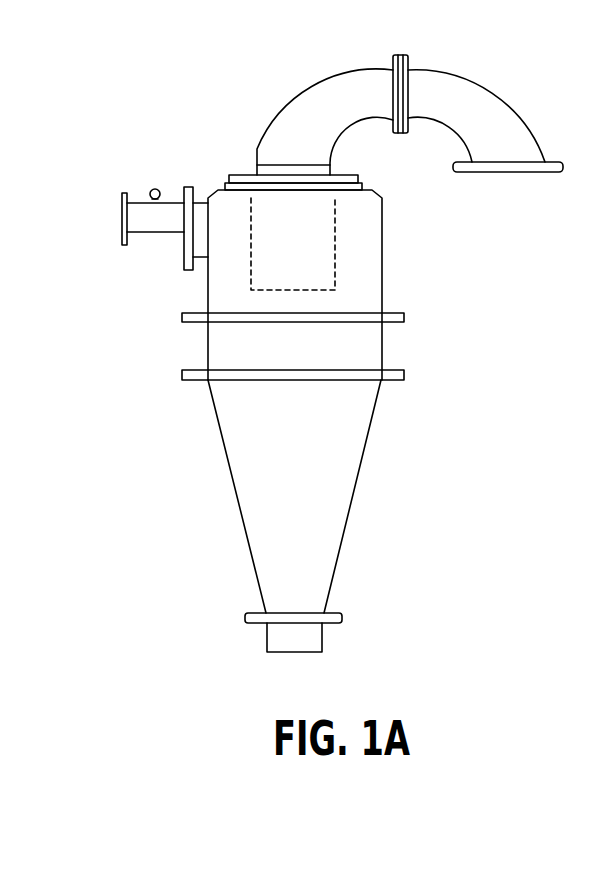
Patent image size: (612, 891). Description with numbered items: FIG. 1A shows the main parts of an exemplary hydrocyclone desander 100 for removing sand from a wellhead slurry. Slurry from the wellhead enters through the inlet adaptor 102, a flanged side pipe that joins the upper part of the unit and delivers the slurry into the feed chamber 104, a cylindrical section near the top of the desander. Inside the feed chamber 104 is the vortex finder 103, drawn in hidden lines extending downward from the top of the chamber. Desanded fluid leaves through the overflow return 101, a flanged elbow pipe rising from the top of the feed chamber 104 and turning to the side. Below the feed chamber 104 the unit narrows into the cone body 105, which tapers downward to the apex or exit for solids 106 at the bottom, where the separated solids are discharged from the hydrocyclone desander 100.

The hydrocyclone desander 100 is at (136, 53).
The overflow return 101 is at (313, 110).
The inlet adaptor 102 is at (125, 213).
The vortex finder 103 is at (305, 231).
The feed chamber 104 is at (228, 275).
The cone body 105 is at (255, 478).
The apex or exit for solids 106 is at (275, 635).